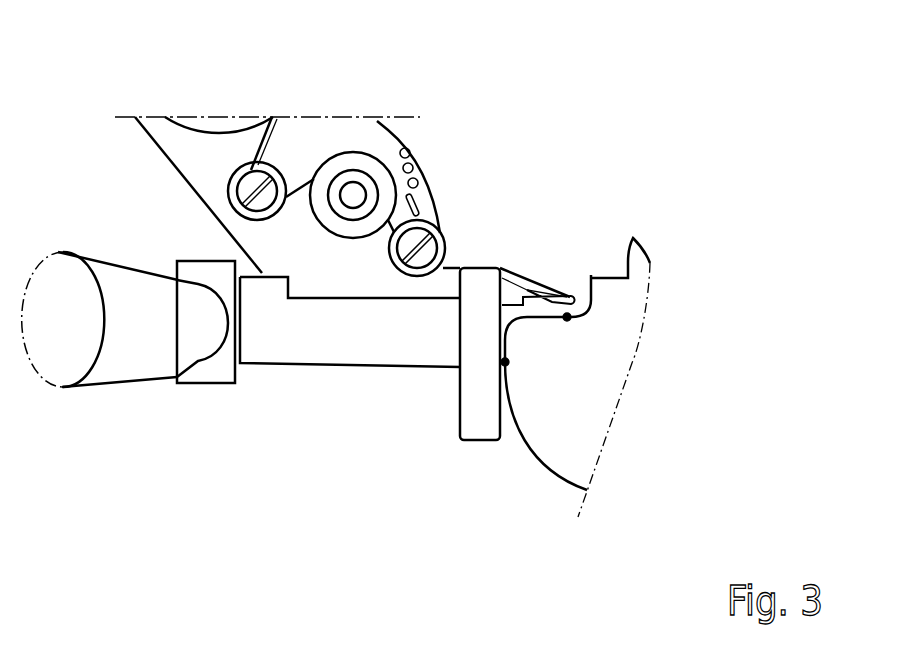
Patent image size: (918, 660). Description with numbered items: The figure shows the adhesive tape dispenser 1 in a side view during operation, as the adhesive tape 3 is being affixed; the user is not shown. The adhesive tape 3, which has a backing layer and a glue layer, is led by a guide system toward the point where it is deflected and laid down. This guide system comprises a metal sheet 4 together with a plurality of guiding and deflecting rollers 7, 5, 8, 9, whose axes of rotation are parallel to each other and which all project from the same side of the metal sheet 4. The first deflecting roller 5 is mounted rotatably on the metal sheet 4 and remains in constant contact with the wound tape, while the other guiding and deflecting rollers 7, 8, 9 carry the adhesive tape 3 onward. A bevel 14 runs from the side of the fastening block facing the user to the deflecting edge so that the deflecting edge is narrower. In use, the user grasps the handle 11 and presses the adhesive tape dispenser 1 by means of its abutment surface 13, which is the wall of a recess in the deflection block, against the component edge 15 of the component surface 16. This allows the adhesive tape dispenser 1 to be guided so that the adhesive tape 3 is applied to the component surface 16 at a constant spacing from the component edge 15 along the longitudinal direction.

The adhesive tape dispenser 1 is at (548, 117).
The adhesive tape 3 is at (258, 142).
The metal sheet 4 is at (223, 215).
The first deflecting roller 5 is at (217, 128).
The guiding and deflecting roller 7 is at (372, 165).
The guiding and deflecting roller 8 is at (441, 243).
The guiding and deflecting roller 9 is at (275, 160).
The handle 11 is at (155, 363).
The abutment surface 13 is at (505, 420).
The bevel 14 is at (565, 295).
The component edge 15 is at (509, 362).
The component surface 16 is at (571, 319).